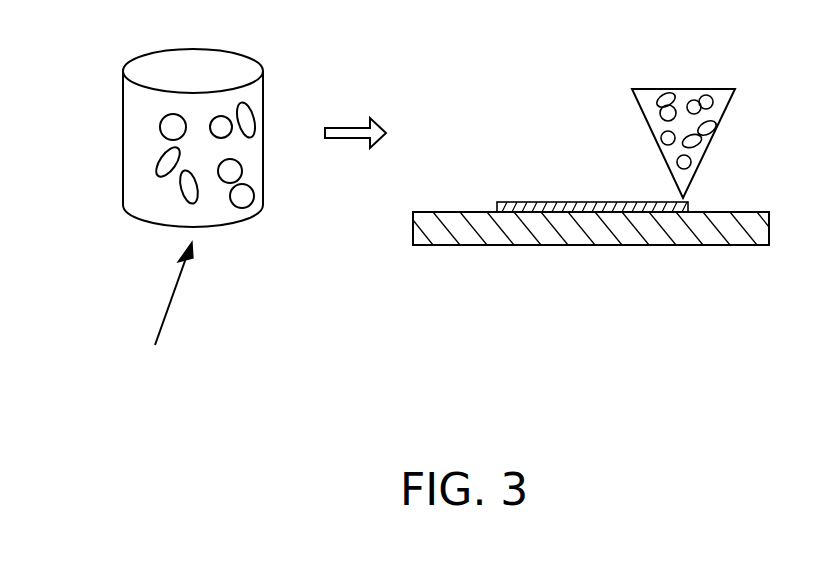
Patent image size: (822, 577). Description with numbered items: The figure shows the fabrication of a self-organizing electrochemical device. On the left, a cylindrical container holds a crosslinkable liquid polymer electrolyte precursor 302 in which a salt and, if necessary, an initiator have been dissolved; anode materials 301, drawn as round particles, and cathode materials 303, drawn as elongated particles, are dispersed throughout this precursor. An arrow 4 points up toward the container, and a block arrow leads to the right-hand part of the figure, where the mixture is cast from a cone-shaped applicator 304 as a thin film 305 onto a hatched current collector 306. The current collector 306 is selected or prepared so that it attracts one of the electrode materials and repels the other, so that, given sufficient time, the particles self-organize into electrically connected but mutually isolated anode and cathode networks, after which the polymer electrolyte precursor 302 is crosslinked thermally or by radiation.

The anode materials 301 is at (222, 116).
The polymer electrolyte precursor 302 is at (135, 122).
The cathode materials 303 is at (253, 115).
The applicator 304 is at (643, 113).
The film 305 is at (510, 202).
The current collector 306 is at (437, 238).
The arrow 4 is at (167, 312).